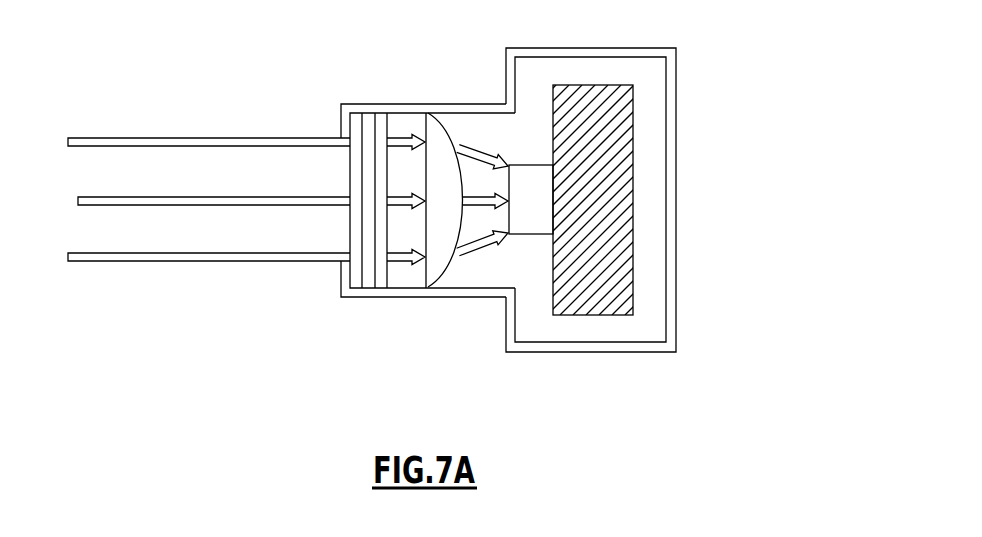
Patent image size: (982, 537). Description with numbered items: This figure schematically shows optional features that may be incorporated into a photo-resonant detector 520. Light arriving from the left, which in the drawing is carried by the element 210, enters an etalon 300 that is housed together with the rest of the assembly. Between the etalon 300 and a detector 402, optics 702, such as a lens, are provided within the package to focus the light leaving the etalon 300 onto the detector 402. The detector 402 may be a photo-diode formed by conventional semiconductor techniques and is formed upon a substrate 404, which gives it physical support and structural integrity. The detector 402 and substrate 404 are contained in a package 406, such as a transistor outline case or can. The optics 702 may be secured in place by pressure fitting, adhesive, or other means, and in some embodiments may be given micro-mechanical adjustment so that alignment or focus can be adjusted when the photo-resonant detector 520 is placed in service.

The optical fibers 210 is at (188, 137).
The optics 702 is at (428, 103).
The etalon 300 is at (368, 298).
The detector 402 is at (526, 185).
The substrate 404 is at (605, 110).
The package 406 is at (642, 352).
The photo-resonant detector 520 is at (707, 75).